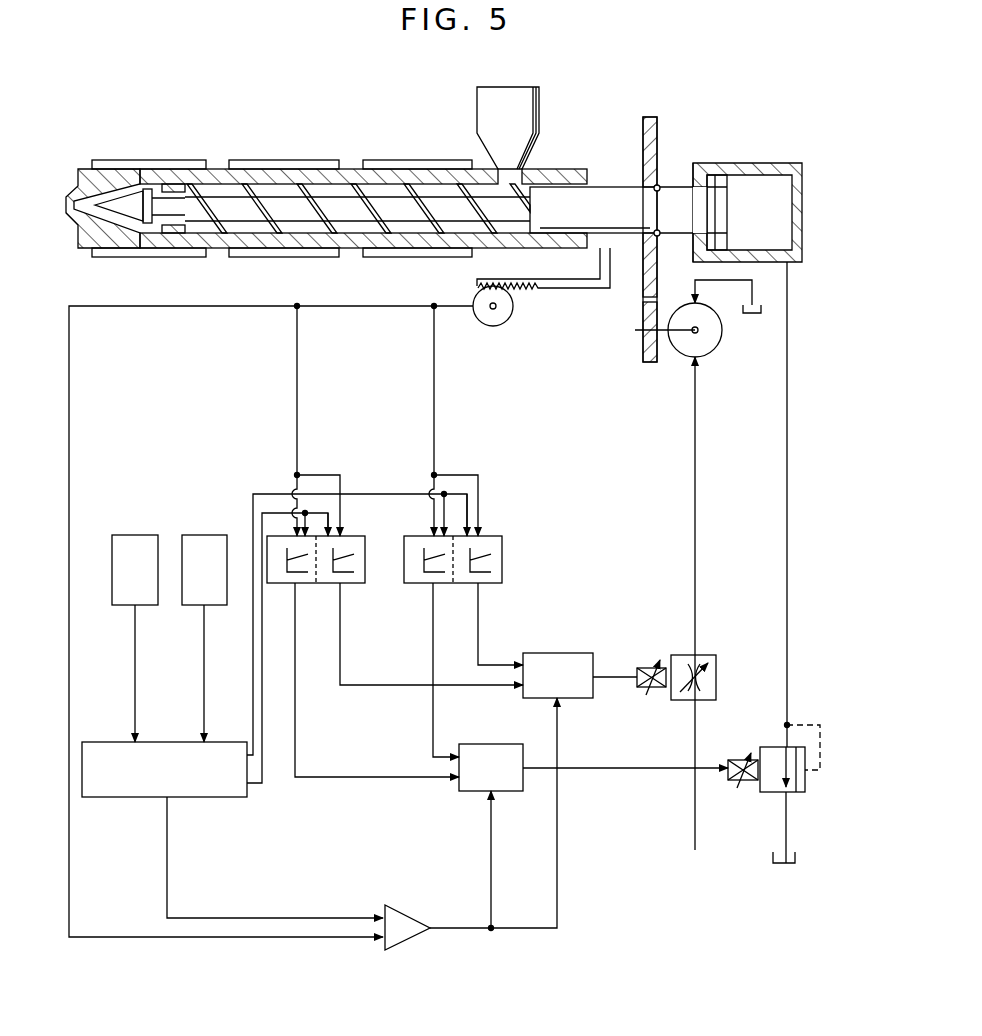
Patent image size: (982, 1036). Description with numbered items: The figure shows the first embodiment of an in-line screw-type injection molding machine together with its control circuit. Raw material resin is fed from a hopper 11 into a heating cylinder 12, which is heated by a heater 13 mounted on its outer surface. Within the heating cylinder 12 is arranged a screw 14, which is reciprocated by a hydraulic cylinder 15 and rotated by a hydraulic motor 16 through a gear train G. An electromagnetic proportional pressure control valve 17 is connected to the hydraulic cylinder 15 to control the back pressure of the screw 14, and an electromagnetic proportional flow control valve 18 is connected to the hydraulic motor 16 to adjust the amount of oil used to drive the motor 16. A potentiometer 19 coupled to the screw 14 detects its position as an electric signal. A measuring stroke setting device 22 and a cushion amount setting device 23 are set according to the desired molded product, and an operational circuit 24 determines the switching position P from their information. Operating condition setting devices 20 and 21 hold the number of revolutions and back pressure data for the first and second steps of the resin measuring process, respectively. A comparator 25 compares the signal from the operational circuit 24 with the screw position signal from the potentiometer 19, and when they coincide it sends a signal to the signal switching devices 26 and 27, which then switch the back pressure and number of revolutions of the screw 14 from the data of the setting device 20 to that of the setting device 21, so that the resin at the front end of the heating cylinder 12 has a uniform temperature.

The hopper 11 is at (540, 88).
The heating cylinder 12 is at (219, 169).
The heater 13 is at (146, 160).
The screw 14 is at (337, 200).
The hydraulic cylinder 15 is at (760, 163).
The hydraulic motor 16 is at (718, 352).
The electromagnetic proportional pressure control valve 17 is at (768, 746).
The electromagnetic proportional flow control valve 18 is at (711, 655).
The potentiometer 19 is at (493, 326).
The operating condition setting device 20 is at (352, 536).
The operating condition setting device 21 is at (490, 536).
The measuring stroke setting device 22 is at (196, 535).
The cushion amount setting device 23 is at (118, 535).
The operational circuit 24 is at (122, 797).
The comparator 25 is at (410, 940).
The signal switching device 26 is at (470, 791).
The signal switching device 27 is at (548, 653).
The gear train G is at (663, 140).